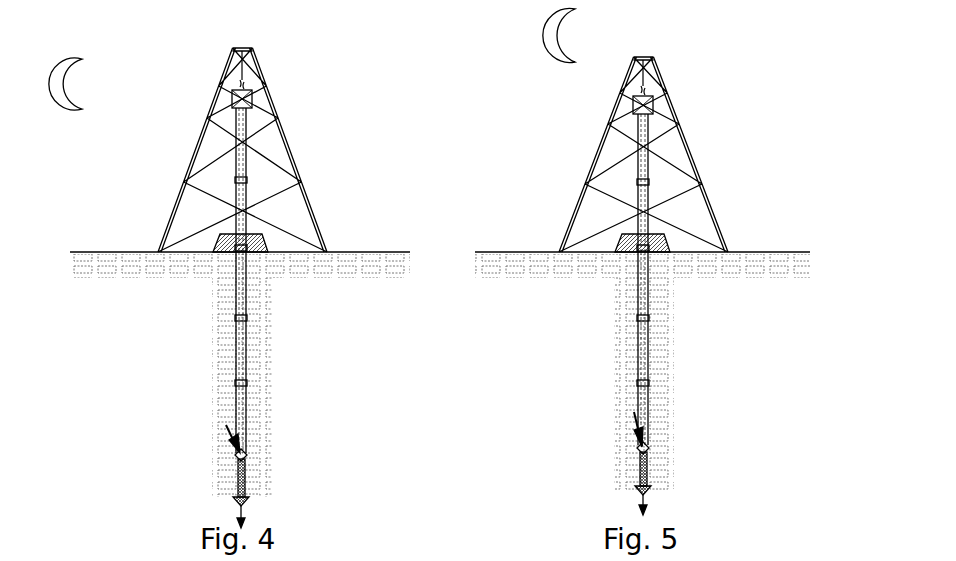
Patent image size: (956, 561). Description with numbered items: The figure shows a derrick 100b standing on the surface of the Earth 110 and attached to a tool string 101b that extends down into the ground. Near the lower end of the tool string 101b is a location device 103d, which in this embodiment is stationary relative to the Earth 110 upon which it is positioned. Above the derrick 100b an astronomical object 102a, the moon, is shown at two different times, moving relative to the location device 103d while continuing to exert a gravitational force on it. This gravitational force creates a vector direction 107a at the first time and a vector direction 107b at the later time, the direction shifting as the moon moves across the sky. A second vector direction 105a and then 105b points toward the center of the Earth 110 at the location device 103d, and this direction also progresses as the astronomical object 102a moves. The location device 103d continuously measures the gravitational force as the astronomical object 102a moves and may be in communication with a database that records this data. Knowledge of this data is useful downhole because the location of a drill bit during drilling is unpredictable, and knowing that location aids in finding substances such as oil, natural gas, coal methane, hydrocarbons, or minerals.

In FIG. 4, the astronomical object 102a is at (92, 84).
In FIG. 5, the astronomical object 102a is at (536, 56).
In FIG. 4, the derrick 100b is at (297, 168).
In FIG. 5, the derrick 100b is at (700, 168).
In FIG. 4, the Earth 110 is at (142, 314).
In FIG. 5, the Earth 110 is at (560, 314).
In FIG. 4, the tool string 101b is at (285, 283).
In FIG. 5, the tool string 101b is at (693, 285).
In FIG. 4, the location device 103d is at (246, 457).
In FIG. 5, the location device 103d is at (648, 452).
In FIG. 4, the vector direction 107a is at (237, 452).
In FIG. 5, the vector direction 107b is at (640, 446).
In FIG. 4, the vector direction 105a is at (237, 495).
In FIG. 5, the vector direction 105b is at (640, 488).